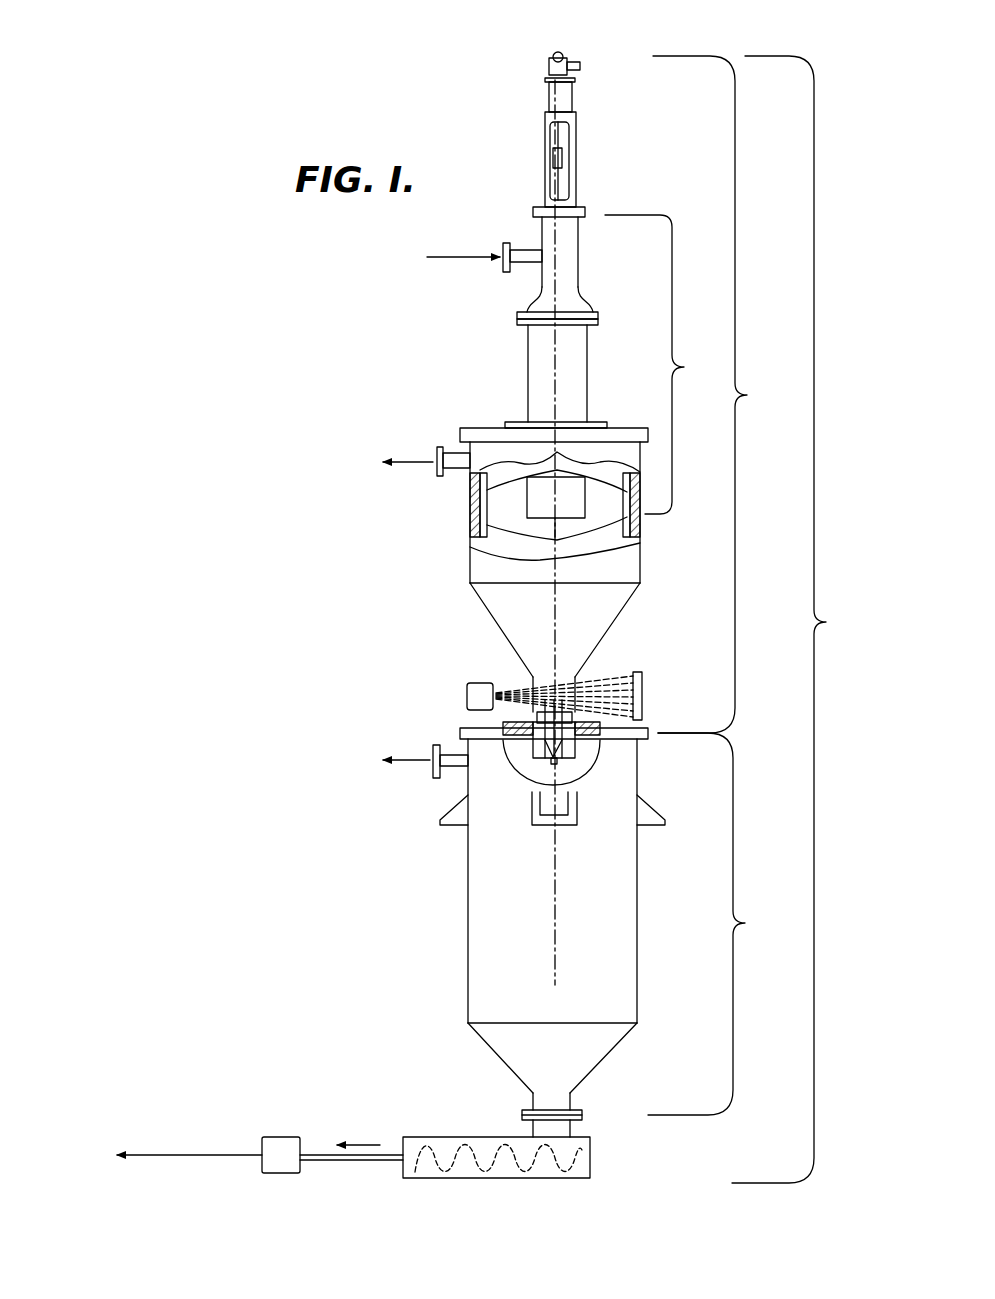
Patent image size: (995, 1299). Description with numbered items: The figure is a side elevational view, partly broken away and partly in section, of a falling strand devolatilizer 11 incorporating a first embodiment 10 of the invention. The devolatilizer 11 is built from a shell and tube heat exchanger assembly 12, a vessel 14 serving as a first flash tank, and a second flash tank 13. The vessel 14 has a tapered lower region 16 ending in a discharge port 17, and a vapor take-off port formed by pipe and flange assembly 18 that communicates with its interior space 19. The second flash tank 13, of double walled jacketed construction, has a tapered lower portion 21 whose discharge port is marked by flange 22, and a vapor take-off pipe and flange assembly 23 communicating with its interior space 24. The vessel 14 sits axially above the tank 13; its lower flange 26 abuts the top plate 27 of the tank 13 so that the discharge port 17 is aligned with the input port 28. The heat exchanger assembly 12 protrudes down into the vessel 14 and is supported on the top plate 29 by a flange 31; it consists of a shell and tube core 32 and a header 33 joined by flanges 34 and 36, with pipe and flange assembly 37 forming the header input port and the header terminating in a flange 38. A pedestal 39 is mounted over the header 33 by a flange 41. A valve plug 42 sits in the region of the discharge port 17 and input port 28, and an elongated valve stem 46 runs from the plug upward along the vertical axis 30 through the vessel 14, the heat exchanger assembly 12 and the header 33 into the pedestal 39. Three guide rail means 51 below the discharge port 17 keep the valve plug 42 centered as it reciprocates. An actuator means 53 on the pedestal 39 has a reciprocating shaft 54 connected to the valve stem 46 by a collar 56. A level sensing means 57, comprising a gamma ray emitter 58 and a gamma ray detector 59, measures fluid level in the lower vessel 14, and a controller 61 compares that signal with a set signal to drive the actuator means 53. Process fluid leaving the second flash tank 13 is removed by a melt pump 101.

The embodiment 10 is at (720, 394).
The devolatilizer 11 is at (800, 619).
The shell and tube heat exchanger assembly 12 is at (663, 364).
The second flash tank 13 is at (611, 924).
The vessel 14 is at (490, 564).
The tapered lower region 16 is at (590, 612).
The discharge port 17 is at (533, 718).
The pipe and flange assembly 18 is at (460, 453).
The interior space 19 is at (503, 495).
The tapered lower portion 21 is at (500, 1045).
The flange 22 is at (530, 1112).
The pipe and flange assembly 23 is at (457, 762).
The interior space 24 is at (537, 765).
The flange 26 is at (520, 724).
The top plate 27 is at (648, 728).
The input port 28 is at (540, 738).
The top plate 29 is at (480, 428).
The vertical axis 30 is at (555, 883).
The flange 31 is at (515, 420).
The shell and tube core 32 is at (540, 373).
The header 33 is at (567, 295).
The flange 34 is at (608, 300).
The flange 36 is at (597, 323).
The pipe and flange assembly 37 is at (530, 263).
The flange 38 is at (538, 216).
The pedestal 39 is at (577, 175).
The flange 41 is at (535, 208).
The valve plug 42 is at (560, 762).
The valve stem 46 is at (557, 178).
The valve plug guide rail means 51 is at (537, 755).
The actuator means 53 is at (558, 100).
The reciprocating shaft 54 is at (553, 139).
The collar 56 is at (562, 158).
The level sensing means 57 is at (477, 681).
The gamma ray emitter 58 is at (467, 698).
The gamma ray detector 59 is at (639, 672).
The controller 61 is at (552, 65).
The melt pump 101 is at (450, 1137).